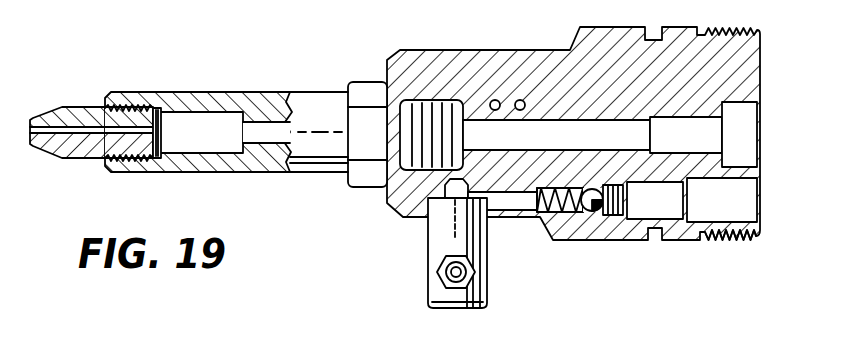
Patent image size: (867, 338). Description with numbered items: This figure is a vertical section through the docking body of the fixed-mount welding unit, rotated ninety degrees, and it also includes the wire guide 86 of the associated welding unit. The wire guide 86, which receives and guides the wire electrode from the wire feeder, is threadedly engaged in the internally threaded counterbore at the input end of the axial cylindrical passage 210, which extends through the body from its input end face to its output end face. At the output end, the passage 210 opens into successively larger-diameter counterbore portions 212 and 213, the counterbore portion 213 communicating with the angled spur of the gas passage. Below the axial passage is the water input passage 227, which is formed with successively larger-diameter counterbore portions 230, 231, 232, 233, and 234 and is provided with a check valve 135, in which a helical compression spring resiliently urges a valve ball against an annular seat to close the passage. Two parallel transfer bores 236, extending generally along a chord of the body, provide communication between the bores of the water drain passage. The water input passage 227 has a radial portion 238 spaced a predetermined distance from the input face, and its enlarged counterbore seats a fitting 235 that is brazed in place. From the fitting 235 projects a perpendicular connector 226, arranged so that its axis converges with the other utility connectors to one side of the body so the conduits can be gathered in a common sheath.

The wire guide 86 is at (222, 92).
The transfer bores 236 is at (520, 100).
The counterbore portion 213 is at (742, 112).
The axial cylindrical passage 210 is at (632, 148).
The counterbore portion 212 is at (706, 152).
The counterbore portion 232 is at (609, 185).
The check valve 135 is at (631, 202).
The counterbore portion 234 is at (745, 222).
The radial portion 238 is at (448, 189).
The fitting 235 is at (428, 243).
The connector 226 is at (470, 298).
The water input passage 227 is at (507, 199).
The counterbore portion 230 is at (553, 214).
The counterbore portion 231 is at (580, 213).
The counterbore portion 233 is at (678, 210).